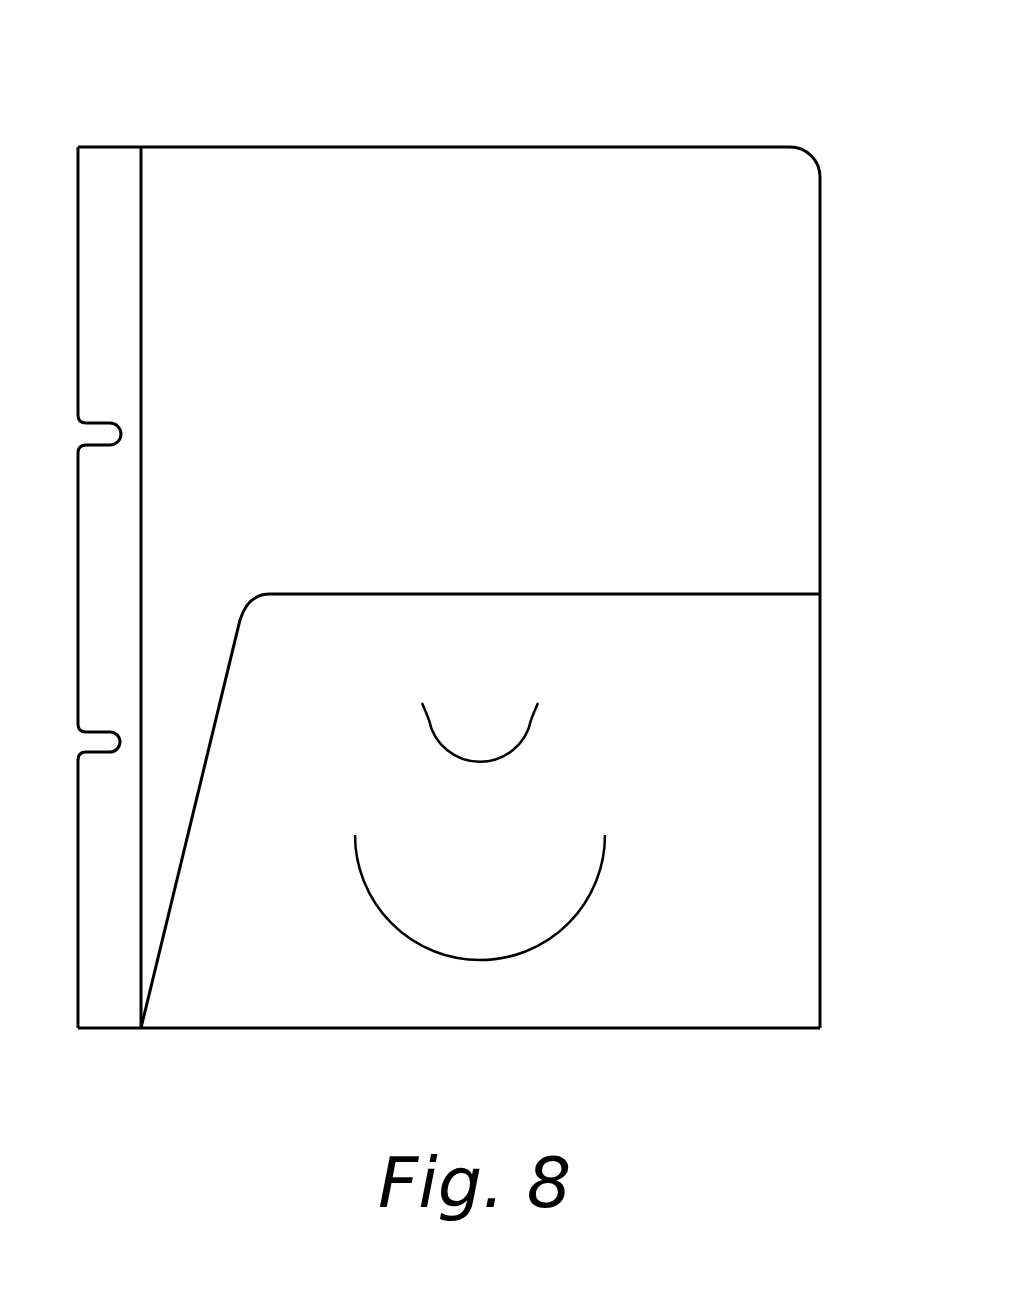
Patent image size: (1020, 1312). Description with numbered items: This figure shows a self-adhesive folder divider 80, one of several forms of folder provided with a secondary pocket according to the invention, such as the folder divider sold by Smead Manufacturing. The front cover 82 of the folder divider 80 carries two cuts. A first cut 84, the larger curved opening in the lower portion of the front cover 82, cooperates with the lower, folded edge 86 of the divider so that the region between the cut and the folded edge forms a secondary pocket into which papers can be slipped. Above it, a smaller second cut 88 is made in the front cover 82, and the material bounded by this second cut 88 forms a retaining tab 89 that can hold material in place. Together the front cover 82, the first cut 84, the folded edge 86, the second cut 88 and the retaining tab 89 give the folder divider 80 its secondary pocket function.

The self-adhesive folder divider 80 is at (408, 86).
The front cover 82 is at (790, 630).
The first cut 84 is at (600, 880).
The lower, folded edge 86 is at (575, 1030).
The second cut 88 is at (526, 738).
The retaining tab 89 is at (463, 722).